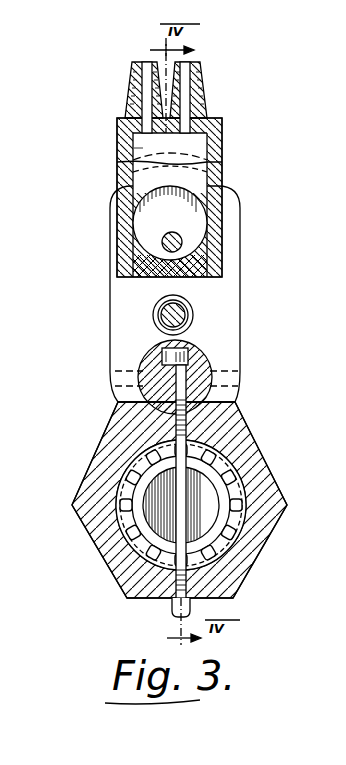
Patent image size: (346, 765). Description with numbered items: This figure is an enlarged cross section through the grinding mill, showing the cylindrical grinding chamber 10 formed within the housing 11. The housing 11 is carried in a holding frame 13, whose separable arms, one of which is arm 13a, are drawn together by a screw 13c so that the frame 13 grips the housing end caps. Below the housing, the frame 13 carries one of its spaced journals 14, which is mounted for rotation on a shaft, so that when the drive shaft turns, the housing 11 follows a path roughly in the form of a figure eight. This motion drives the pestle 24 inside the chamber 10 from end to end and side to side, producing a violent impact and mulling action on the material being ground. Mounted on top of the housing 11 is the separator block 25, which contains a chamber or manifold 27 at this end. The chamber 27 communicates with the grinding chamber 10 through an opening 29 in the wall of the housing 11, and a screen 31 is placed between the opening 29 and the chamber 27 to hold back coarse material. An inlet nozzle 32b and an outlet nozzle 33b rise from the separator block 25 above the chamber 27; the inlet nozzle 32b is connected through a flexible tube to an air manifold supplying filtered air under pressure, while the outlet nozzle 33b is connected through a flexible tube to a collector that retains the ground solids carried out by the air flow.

The cylindrical grinding chamber 10 is at (185, 224).
The housing 11 is at (232, 236).
The holding frame 13 is at (246, 462).
The separable arm 13a is at (121, 291).
The screw 13c is at (161, 315).
The journal 14 is at (128, 478).
The pestle 24 is at (162, 241).
The separator block 25 is at (223, 122).
The chamber 27 is at (145, 148).
The opening 29 is at (117, 178).
The screen 31 is at (215, 147).
The inlet nozzle 32b is at (200, 76).
The outlet nozzle 33b is at (130, 78).